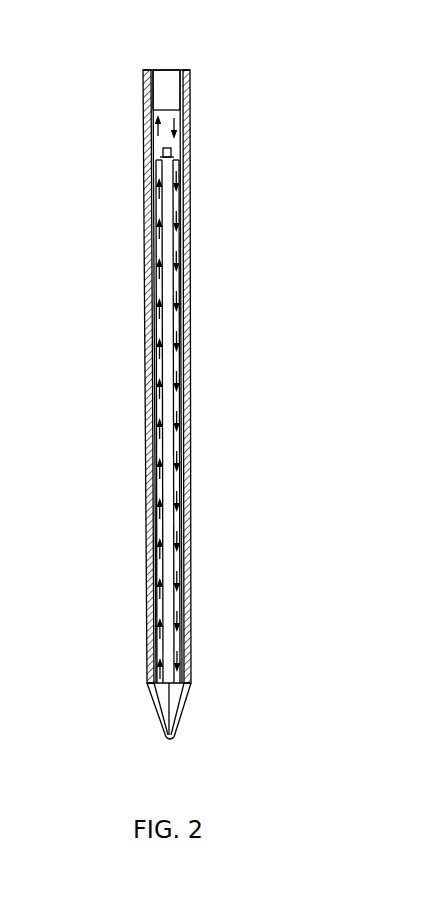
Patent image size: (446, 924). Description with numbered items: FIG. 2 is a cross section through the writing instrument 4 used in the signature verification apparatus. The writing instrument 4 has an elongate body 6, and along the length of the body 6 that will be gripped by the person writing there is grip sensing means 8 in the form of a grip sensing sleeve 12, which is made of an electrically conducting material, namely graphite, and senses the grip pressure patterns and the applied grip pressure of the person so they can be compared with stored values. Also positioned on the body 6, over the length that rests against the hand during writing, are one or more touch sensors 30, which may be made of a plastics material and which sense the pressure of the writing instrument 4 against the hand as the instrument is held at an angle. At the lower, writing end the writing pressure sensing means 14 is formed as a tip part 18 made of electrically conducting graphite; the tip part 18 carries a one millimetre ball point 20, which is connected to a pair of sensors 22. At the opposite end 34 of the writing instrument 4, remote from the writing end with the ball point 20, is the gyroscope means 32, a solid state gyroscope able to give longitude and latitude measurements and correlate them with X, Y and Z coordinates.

The writing instrument 4 is at (96, 399).
The body 6 is at (190, 313).
The grip sensing means 8 is at (147, 542).
The grip sensing sleeve 12 is at (191, 597).
The writing pressure sensing means 14 is at (190, 708).
The tip part 18 is at (153, 706).
The ball point 20 is at (174, 739).
The sensors 22 is at (160, 639).
The touch sensors 30 is at (144, 247).
The gyroscope means 32 is at (168, 92).
The end 34 is at (143, 132).